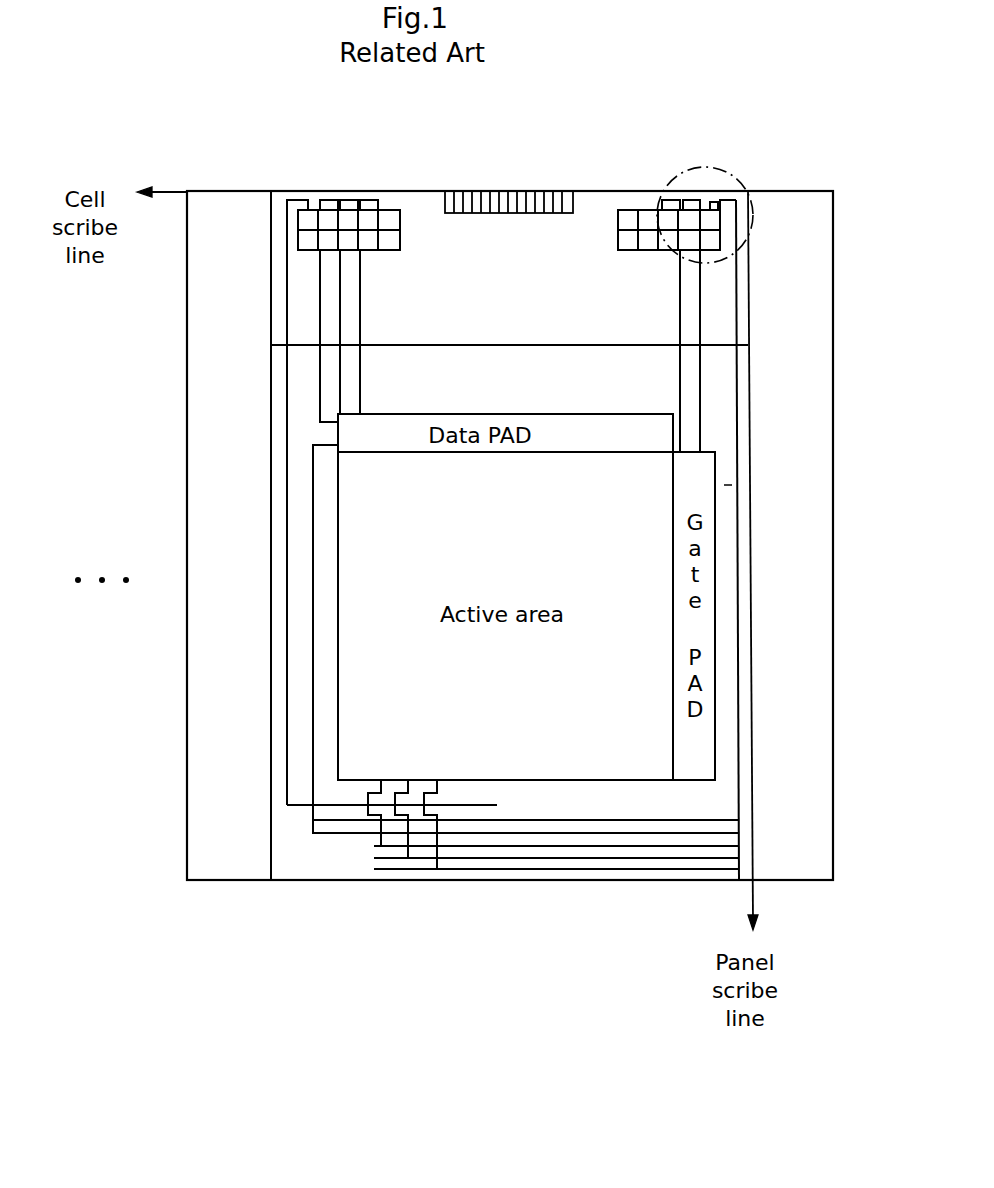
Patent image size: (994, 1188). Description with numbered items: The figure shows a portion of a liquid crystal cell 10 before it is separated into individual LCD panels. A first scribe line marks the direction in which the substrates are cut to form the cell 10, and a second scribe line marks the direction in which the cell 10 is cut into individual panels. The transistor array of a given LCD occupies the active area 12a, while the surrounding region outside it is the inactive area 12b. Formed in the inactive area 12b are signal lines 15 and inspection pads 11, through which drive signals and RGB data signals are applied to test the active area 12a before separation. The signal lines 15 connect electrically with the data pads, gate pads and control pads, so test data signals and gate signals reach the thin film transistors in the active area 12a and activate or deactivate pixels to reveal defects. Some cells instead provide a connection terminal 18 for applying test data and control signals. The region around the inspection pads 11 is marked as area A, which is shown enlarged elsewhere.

The cell 10 is at (792, 191).
The inspection pads 11 is at (717, 206).
The active area 12a is at (724, 485).
The inactive area 12b is at (580, 258).
The signal lines 15 is at (737, 373).
The connection terminal 18 is at (508, 191).
The area A is at (672, 177).